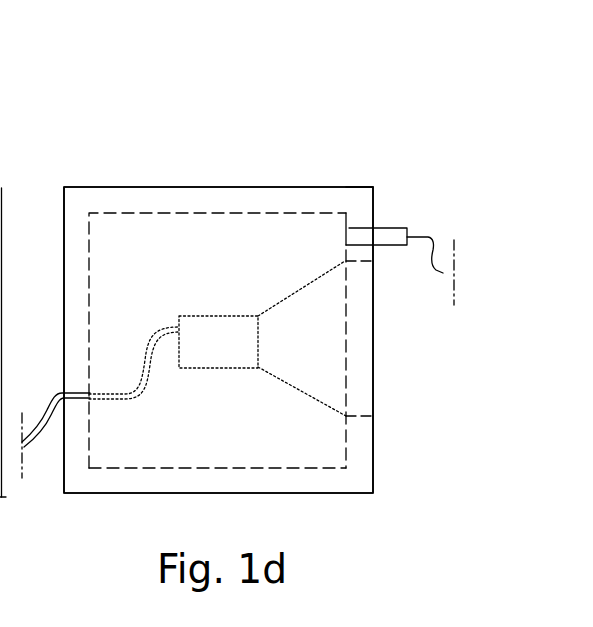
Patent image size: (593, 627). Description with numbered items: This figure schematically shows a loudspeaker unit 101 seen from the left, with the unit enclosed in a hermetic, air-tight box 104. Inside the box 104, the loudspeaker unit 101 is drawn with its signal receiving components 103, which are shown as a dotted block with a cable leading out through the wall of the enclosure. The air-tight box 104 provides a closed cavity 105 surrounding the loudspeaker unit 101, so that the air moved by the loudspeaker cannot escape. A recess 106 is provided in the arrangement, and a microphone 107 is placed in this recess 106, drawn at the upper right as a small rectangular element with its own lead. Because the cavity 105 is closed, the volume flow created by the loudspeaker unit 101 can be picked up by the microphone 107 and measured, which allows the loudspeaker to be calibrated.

The loudspeaker unit 101 is at (226, 105).
The signal receiving components 103 is at (205, 355).
The box 104 is at (222, 242).
The closed cavity 105 is at (302, 433).
The recess 106 is at (360, 230).
The microphone 107 is at (385, 232).